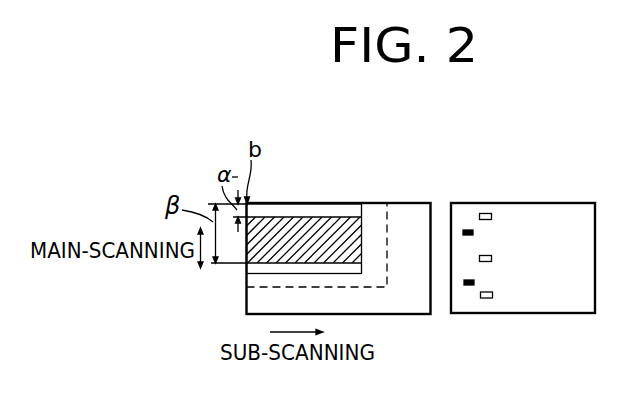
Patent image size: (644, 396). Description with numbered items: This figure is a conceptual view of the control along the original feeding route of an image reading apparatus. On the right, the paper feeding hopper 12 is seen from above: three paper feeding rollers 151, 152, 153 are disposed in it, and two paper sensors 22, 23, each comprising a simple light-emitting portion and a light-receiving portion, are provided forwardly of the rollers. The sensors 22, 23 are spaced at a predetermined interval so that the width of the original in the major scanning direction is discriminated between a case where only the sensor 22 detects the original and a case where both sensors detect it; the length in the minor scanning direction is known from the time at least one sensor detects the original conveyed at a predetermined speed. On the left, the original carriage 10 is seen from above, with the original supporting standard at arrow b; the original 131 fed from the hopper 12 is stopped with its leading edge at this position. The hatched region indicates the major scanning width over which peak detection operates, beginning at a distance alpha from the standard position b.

The original carriage 10 is at (345, 203).
The original 131 is at (246, 274).
The hopper 12 is at (582, 203).
The paper feeding roller 151 is at (488, 214).
The paper feeding roller 152 is at (492, 258).
The paper feeding roller 153 is at (487, 298).
The paper sensor 22 is at (468, 230).
The paper sensor 23 is at (467, 285).